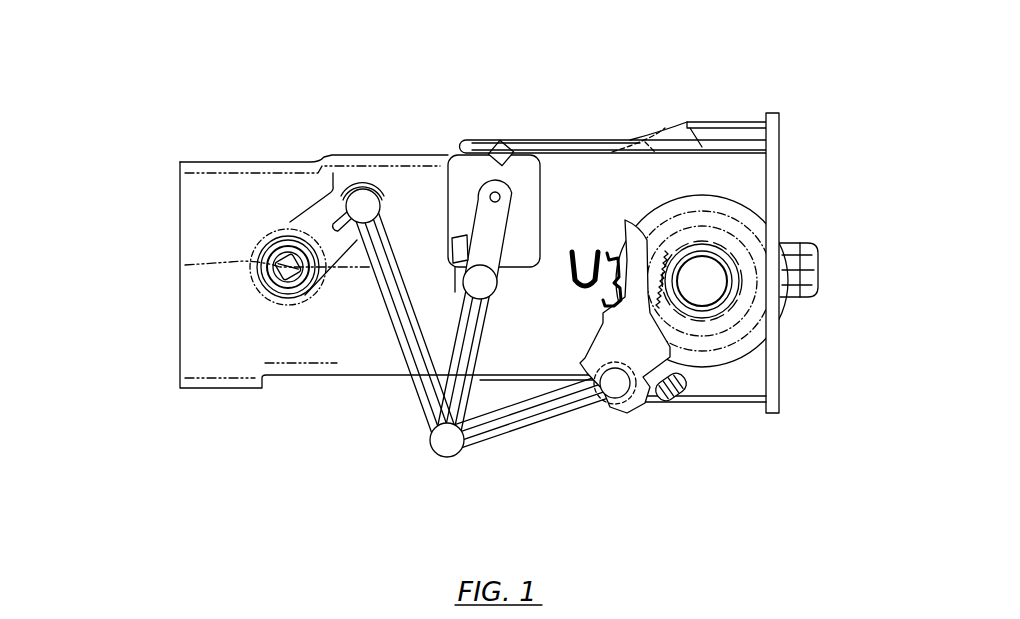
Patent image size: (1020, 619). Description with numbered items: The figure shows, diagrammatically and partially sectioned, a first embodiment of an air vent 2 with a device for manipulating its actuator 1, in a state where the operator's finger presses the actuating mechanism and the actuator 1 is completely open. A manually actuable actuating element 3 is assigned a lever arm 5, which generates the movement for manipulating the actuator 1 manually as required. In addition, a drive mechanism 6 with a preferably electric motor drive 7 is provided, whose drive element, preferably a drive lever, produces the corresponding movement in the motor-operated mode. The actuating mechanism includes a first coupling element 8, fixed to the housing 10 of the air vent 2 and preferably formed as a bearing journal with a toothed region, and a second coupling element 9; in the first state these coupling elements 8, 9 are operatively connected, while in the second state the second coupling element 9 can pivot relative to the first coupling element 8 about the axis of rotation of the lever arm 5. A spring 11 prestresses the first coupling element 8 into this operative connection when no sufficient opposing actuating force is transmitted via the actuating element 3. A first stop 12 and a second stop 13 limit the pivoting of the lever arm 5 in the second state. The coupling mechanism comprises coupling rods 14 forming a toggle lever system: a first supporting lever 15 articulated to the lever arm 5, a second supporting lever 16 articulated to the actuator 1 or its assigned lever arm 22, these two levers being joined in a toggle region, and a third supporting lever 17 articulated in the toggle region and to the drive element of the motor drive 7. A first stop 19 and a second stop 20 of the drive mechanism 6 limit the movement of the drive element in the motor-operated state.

The actuator 1 is at (213, 260).
The air vent 2 is at (800, 139).
The actuating element 3 is at (747, 214).
The lever arm of the actuating element 5 is at (645, 342).
The drive mechanism 6 is at (470, 172).
The motor drive 7 is at (538, 185).
The first coupling element 8 is at (738, 318).
The second coupling element 9 is at (690, 337).
The housing 10 is at (268, 163).
The spring 11 is at (620, 257).
The first stop 12 is at (675, 398).
The second stop 13 is at (593, 253).
The coupling rods 14 is at (438, 354).
The first supporting lever 15 is at (530, 412).
The second supporting lever 16 is at (400, 318).
The third supporting lever 17 is at (460, 372).
The first stop 19 is at (463, 243).
The second stop 20 is at (505, 151).
The lever arm of the actuator 22 is at (315, 228).